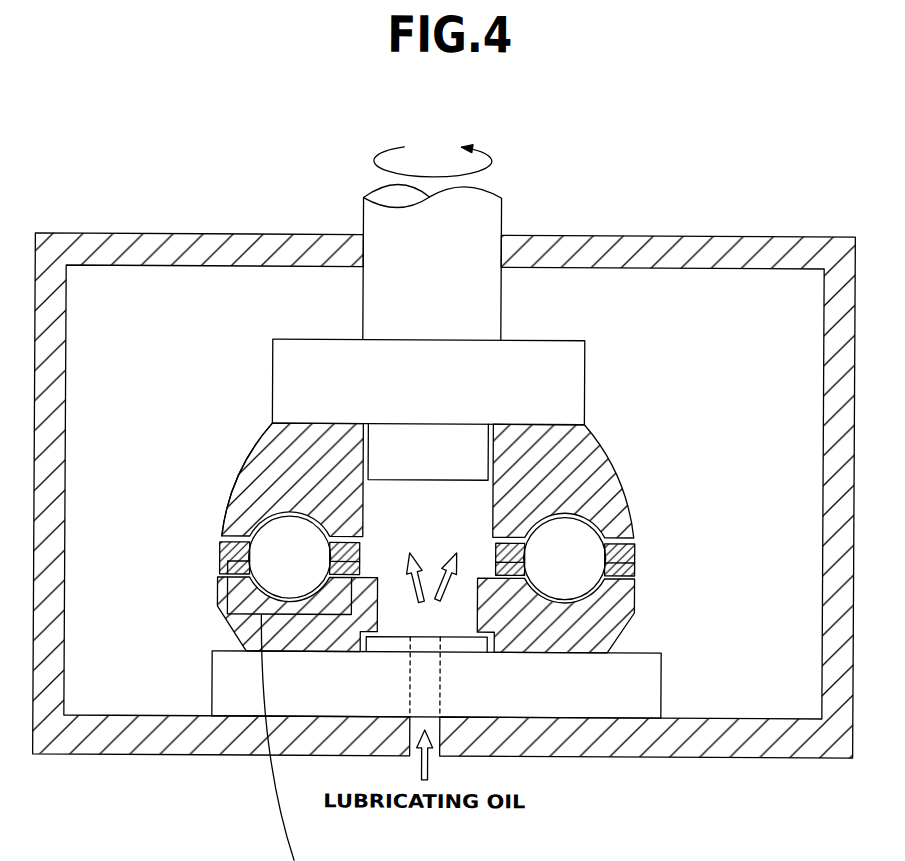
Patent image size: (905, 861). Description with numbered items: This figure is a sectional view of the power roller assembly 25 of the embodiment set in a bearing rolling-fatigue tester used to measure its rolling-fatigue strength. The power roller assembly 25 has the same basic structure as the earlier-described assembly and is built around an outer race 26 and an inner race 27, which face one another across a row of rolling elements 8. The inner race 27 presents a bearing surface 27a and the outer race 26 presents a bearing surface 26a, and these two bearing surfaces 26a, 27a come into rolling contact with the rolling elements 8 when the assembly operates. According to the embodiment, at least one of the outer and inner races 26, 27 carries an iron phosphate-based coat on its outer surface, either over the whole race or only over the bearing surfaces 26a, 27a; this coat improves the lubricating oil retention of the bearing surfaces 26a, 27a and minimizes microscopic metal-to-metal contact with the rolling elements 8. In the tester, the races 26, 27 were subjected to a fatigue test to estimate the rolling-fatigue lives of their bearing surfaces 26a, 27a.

The power roller assembly 25 is at (712, 450).
The inner race 27 is at (575, 460).
The bearing surface 27a is at (272, 503).
The rolling elements 8 is at (222, 547).
The outer race 26 is at (600, 633).
The bearing surface 26a is at (602, 597).